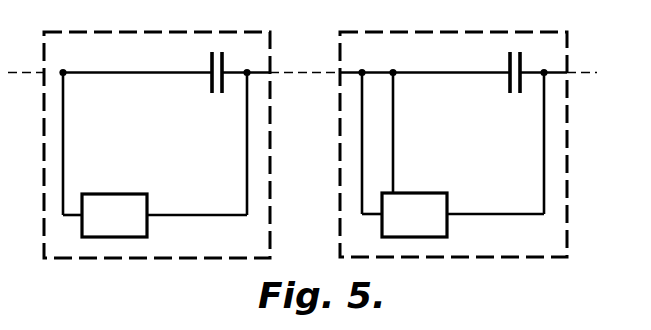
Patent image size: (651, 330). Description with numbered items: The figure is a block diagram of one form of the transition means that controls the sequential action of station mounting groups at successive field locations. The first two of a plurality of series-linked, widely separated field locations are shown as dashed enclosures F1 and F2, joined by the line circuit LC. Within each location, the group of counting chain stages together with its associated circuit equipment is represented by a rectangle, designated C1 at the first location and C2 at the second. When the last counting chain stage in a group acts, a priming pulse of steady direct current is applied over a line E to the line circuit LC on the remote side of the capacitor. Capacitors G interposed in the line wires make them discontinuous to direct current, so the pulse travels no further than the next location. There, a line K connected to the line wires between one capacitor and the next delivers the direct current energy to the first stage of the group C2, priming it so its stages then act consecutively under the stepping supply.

The capacitor G is at (346, 68).
The line circuit LC is at (300, 72).
The group of counting chain stages C1 is at (105, 155).
The group of counting chain stages C2 is at (404, 155).
The line E is at (206, 214).
The first field location F1 is at (157, 146).
The second field location F2 is at (453, 146).
The line K is at (393, 136).